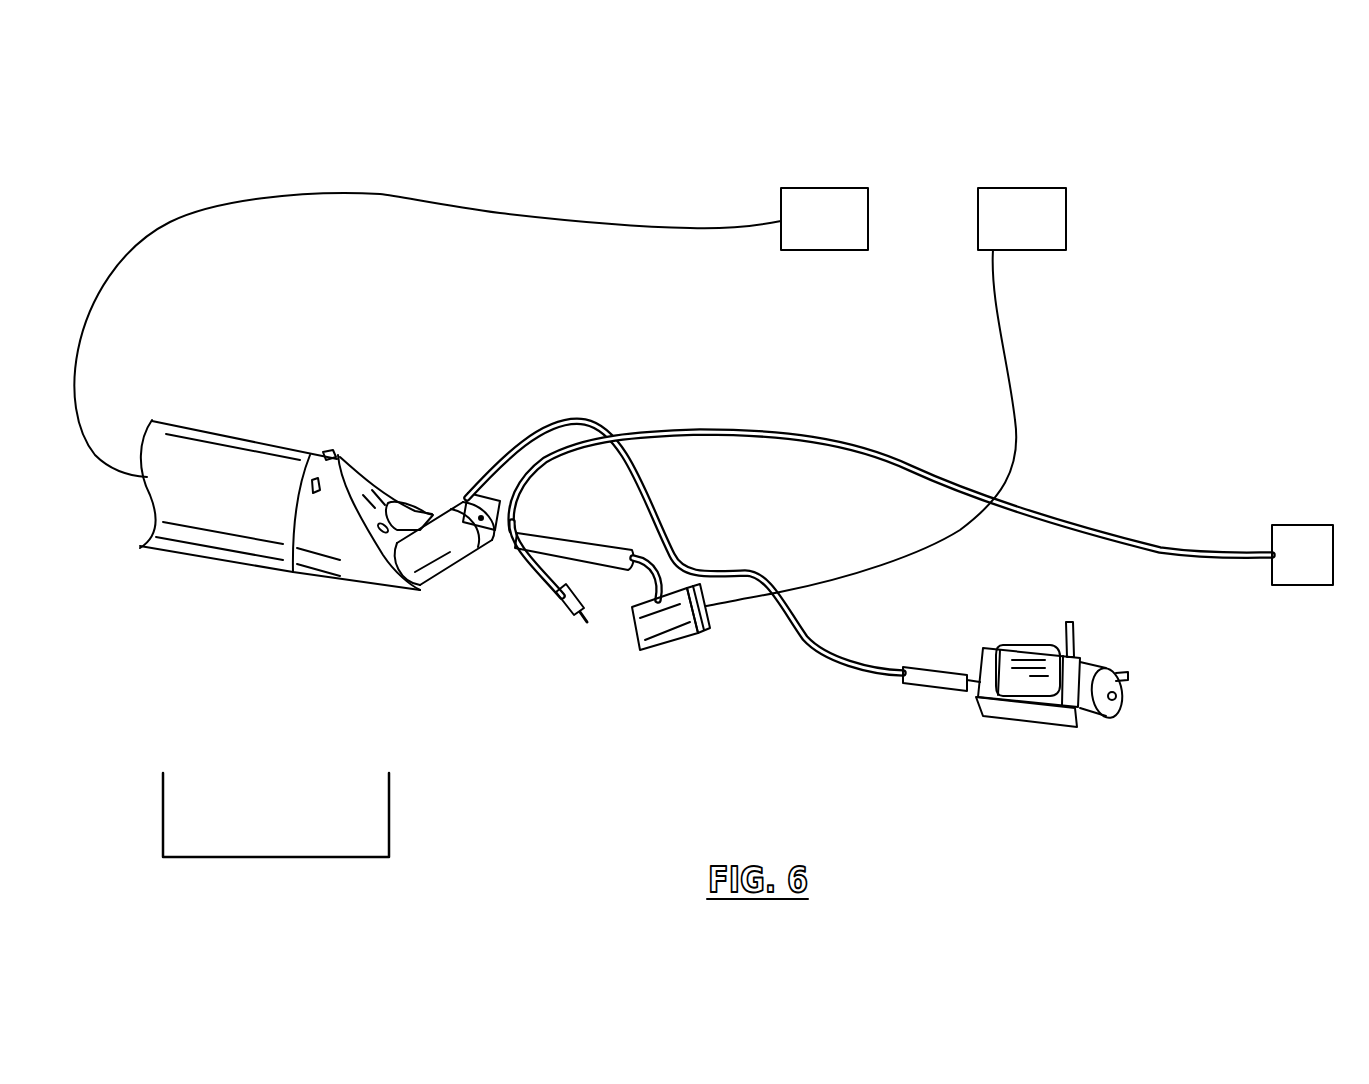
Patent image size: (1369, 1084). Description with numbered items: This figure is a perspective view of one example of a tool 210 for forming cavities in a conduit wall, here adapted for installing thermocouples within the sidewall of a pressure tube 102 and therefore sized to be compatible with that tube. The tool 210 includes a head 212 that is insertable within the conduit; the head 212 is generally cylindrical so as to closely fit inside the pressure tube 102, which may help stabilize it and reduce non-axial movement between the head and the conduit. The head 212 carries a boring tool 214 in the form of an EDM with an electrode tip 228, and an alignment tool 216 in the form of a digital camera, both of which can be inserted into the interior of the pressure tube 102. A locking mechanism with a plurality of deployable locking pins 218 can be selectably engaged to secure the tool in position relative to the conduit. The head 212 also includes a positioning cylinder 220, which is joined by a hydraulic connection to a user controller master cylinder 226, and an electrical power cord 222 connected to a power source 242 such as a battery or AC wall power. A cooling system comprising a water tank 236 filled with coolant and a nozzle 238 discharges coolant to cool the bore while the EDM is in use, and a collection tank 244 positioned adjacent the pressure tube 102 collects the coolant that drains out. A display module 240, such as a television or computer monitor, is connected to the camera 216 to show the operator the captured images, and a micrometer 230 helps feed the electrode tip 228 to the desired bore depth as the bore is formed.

The pressure tube 102 is at (247, 443).
The tool 210 is at (547, 346).
The head 212 is at (322, 560).
The boring tool 214 is at (527, 565).
The alignment tool 216 is at (670, 647).
The deployable locking pins 218 is at (340, 452).
The positioning cylinder 220 is at (443, 580).
The electrical power cord 222 is at (905, 465).
The user controller master cylinder 226 is at (930, 688).
The electrode tip 228 is at (570, 627).
The micrometer 230 is at (1023, 723).
The water tank 236 is at (822, 196).
The nozzle 238 is at (600, 570).
The display module 240 is at (1025, 196).
The power source 242 is at (1297, 540).
The collection tank 244 is at (389, 835).